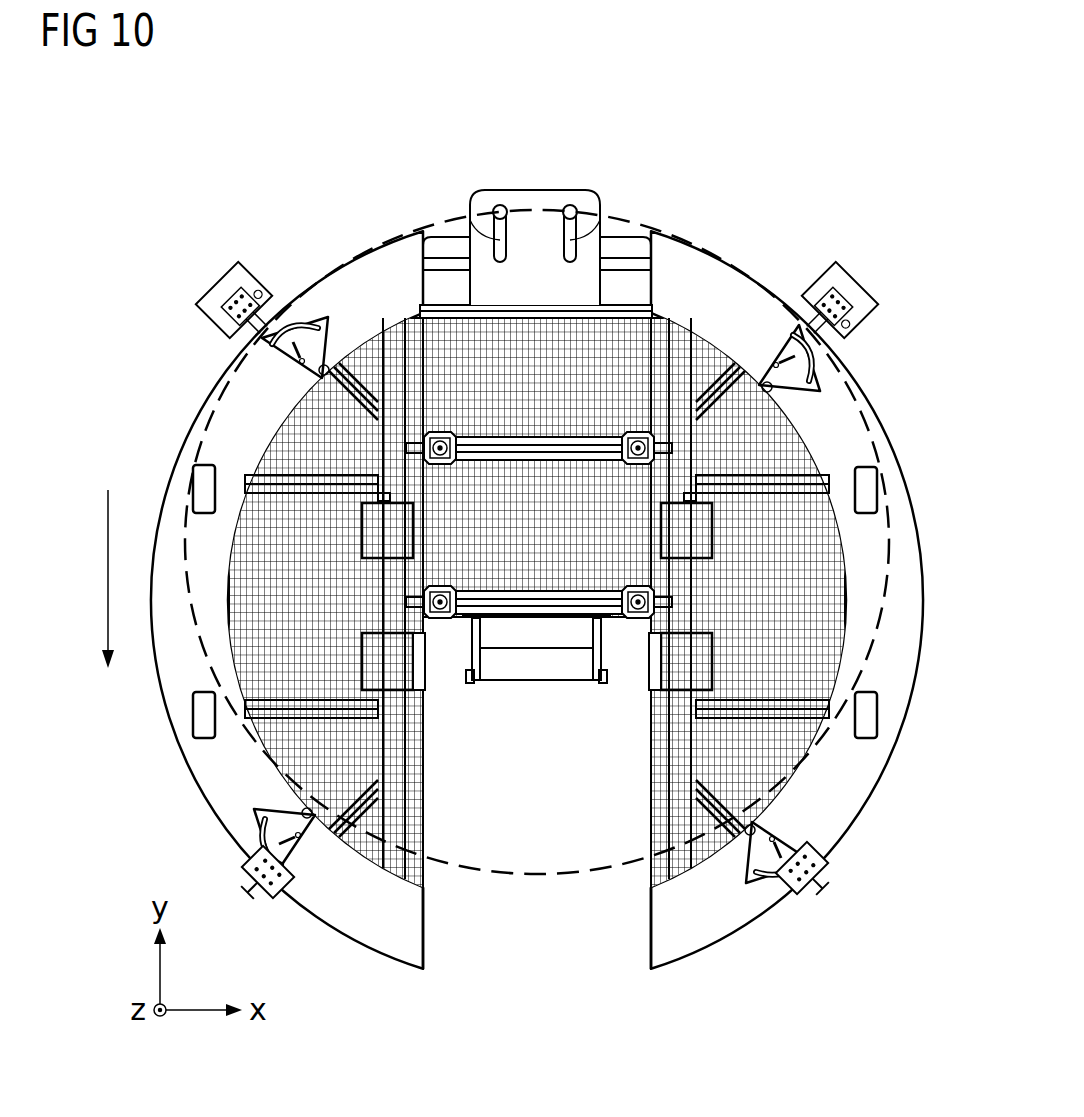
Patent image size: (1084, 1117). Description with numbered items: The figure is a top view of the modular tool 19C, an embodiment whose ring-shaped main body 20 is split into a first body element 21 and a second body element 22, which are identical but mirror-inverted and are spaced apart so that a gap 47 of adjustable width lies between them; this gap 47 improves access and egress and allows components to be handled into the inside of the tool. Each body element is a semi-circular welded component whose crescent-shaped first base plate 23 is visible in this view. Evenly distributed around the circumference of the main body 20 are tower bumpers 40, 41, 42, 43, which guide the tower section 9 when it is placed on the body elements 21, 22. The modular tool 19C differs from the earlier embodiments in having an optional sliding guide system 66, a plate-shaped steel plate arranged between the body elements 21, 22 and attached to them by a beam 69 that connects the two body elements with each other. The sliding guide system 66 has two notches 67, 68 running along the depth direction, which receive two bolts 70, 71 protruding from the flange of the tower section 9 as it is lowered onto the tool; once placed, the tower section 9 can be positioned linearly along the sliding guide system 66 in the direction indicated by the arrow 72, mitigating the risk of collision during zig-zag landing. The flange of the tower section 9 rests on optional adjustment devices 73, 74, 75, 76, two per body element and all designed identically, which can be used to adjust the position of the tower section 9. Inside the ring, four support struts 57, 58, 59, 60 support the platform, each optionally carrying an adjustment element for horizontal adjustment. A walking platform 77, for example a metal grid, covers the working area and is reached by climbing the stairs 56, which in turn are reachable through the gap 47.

The modular tool 19C is at (336, 120).
The sliding guide system 66 is at (552, 208).
The bolt 70 is at (497, 204).
The bolt 71 is at (570, 204).
The notch 67 is at (478, 222).
The notch 68 is at (593, 222).
The beam 69 is at (645, 255).
The tower bumper 43 is at (224, 300).
The adjustment device 76 is at (303, 305).
The tower bumper 40 is at (850, 300).
The adjustment device 73 is at (833, 370).
The support strut 60 is at (428, 447).
The support strut 57 is at (652, 447).
The tower section 9 is at (885, 488).
The walking platform 77 is at (760, 560).
The arrow 72 is at (79, 579).
The support strut 59 is at (438, 628).
The support strut 58 is at (640, 628).
The stairs 56 is at (567, 672).
The first base plate 23 is at (192, 790).
The adjustment device 75 is at (248, 840).
The tower bumper 42 is at (268, 893).
The tower bumper 41 is at (824, 870).
The adjustment device 74 is at (775, 898).
The gap 47 is at (521, 915).
The first body element 21 is at (440, 945).
The second body element 22 is at (603, 933).
The main body 20 is at (537, 956).